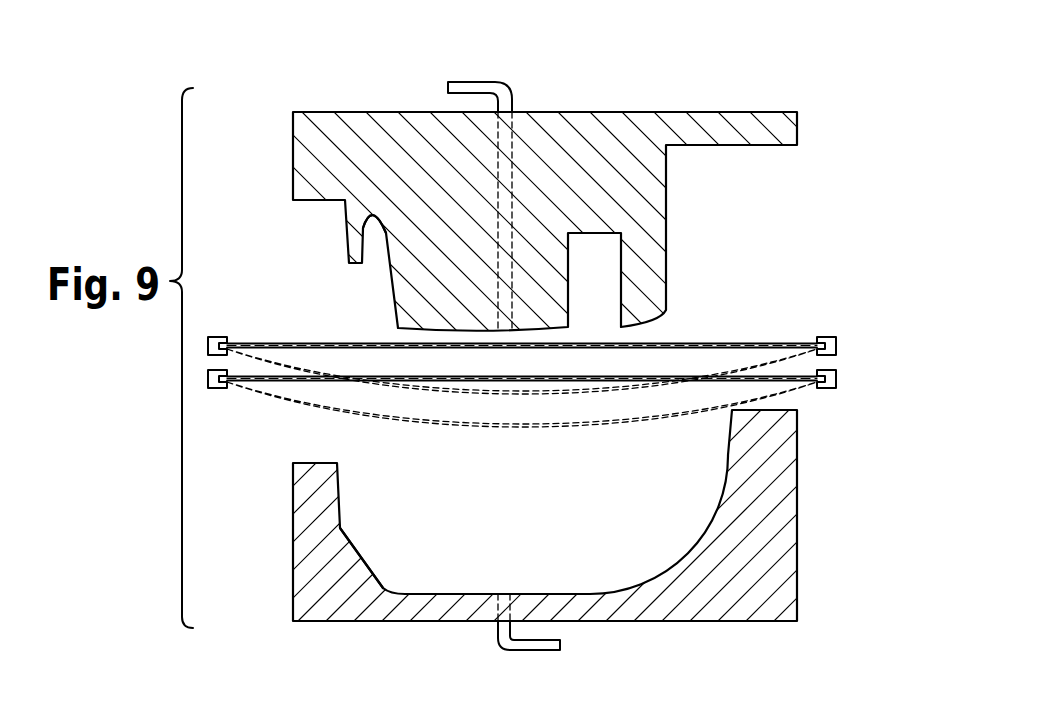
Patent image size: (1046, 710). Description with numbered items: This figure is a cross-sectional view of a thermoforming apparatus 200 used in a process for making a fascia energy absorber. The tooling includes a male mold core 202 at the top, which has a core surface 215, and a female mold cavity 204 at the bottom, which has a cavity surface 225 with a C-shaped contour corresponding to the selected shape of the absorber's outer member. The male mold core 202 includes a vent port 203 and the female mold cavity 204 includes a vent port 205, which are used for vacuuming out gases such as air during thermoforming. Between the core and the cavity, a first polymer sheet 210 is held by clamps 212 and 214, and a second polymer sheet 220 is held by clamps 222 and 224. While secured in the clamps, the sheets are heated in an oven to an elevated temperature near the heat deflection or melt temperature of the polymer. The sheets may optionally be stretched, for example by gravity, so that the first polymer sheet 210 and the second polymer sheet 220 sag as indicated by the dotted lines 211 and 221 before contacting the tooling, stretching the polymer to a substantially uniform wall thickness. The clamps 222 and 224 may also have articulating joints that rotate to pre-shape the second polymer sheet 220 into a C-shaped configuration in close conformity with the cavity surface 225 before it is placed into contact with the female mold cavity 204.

The thermoforming apparatus 200 is at (314, 79).
The male mold core 202 is at (323, 148).
The vent port 203 is at (463, 87).
The female mold cavity 204 is at (320, 532).
The vent port 205 is at (545, 650).
The first polymer sheet 210 is at (745, 343).
The dotted line showing sag of first polymer sheet 211 is at (545, 394).
The clamp 212 is at (220, 337).
The clamp 214 is at (833, 338).
The core surface 215 is at (390, 262).
The second polymer sheet 220 is at (616, 381).
The dotted line showing sag of second polymer sheet 221 is at (457, 428).
The clamp 222 is at (215, 388).
The clamp 224 is at (833, 389).
The cavity surface 225 is at (360, 553).